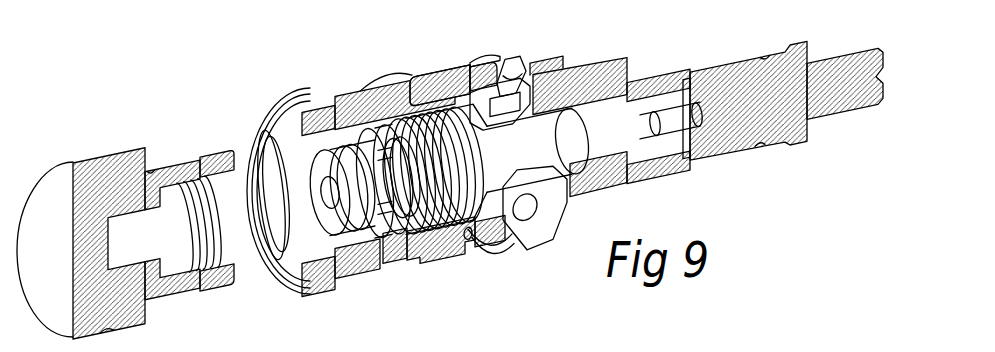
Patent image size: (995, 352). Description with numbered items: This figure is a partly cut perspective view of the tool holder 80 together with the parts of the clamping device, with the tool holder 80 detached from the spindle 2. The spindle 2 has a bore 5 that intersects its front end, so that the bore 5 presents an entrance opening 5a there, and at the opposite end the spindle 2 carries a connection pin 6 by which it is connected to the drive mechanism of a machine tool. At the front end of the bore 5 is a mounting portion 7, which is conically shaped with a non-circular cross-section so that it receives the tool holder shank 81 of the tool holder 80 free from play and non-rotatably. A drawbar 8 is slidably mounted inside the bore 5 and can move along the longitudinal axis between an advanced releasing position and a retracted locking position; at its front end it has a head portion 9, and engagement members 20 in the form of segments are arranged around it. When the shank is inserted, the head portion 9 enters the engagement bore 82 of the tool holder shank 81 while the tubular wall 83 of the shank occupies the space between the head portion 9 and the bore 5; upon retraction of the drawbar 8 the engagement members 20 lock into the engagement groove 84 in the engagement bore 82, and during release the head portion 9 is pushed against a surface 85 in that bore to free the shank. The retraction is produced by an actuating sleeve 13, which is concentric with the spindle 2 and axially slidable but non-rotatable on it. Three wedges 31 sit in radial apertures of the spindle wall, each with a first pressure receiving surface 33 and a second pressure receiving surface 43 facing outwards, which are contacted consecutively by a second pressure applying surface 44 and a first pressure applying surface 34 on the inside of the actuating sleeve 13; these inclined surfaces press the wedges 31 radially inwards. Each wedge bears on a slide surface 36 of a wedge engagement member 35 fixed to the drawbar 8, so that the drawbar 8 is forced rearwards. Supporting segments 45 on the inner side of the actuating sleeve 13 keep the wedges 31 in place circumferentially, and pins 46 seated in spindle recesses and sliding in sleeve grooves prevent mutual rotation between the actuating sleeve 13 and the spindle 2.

The tool holder 80 is at (80, 146).
The tool holder shank 81 is at (163, 167).
The engagement bore 82 is at (178, 240).
The tubular wall 83 is at (217, 163).
The engagement groove 84 is at (208, 265).
The surface 85 is at (180, 258).
The bore 5 is at (328, 135).
The entrance opening 5a is at (292, 238).
The spindle 2 is at (355, 110).
The actuating sleeve 13 is at (442, 75).
The mounting portion 7 is at (327, 240).
The head portion 9 is at (368, 217).
The engagement members 20 is at (395, 203).
The first pressure applying surface 34 is at (457, 93).
The drawbar 8 is at (488, 193).
The second pressure receiving surface 43 is at (473, 92).
The second pressure applying surface 44 is at (495, 87).
The first pressure receiving surface 33 is at (500, 83).
The wedges 31 is at (533, 103).
The wedge engagement members 35 is at (518, 113).
The slide surface 36 is at (523, 203).
The supporting segments 45 is at (513, 247).
The pins 46 is at (468, 238).
The connection pin 6 is at (850, 98).